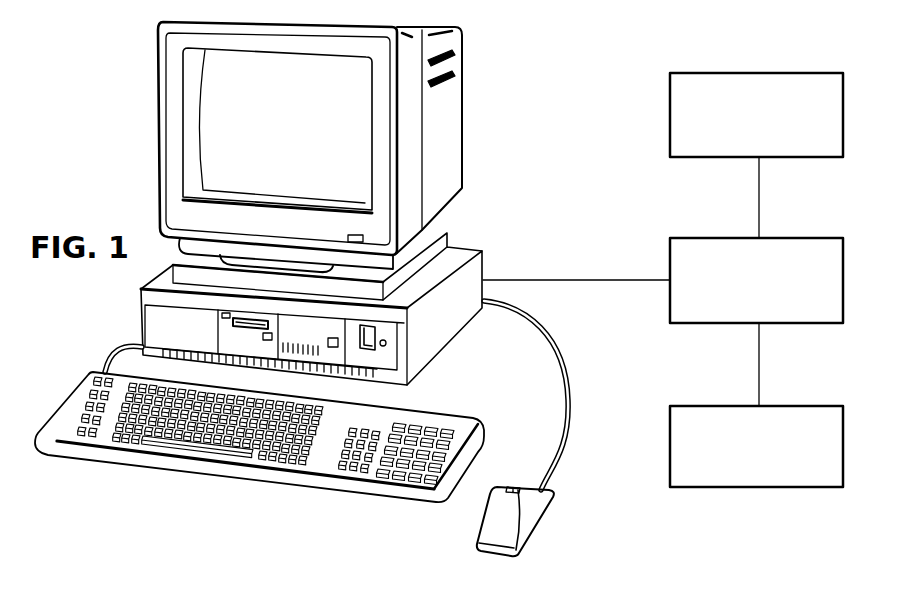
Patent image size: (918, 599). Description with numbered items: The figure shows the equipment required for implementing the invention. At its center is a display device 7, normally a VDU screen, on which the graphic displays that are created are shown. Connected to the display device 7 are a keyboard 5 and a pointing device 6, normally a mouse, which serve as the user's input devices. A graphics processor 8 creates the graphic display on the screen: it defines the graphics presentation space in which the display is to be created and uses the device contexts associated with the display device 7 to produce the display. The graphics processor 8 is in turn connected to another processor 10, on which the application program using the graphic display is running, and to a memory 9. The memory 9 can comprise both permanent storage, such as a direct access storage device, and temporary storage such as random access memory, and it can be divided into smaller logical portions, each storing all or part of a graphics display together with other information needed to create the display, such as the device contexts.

The keyboard 5 is at (130, 468).
The pointing device 6 is at (530, 521).
The display device 7 is at (158, 137).
The graphics processor 8 is at (815, 302).
The memory 9 is at (815, 469).
The processor 10 is at (820, 133).